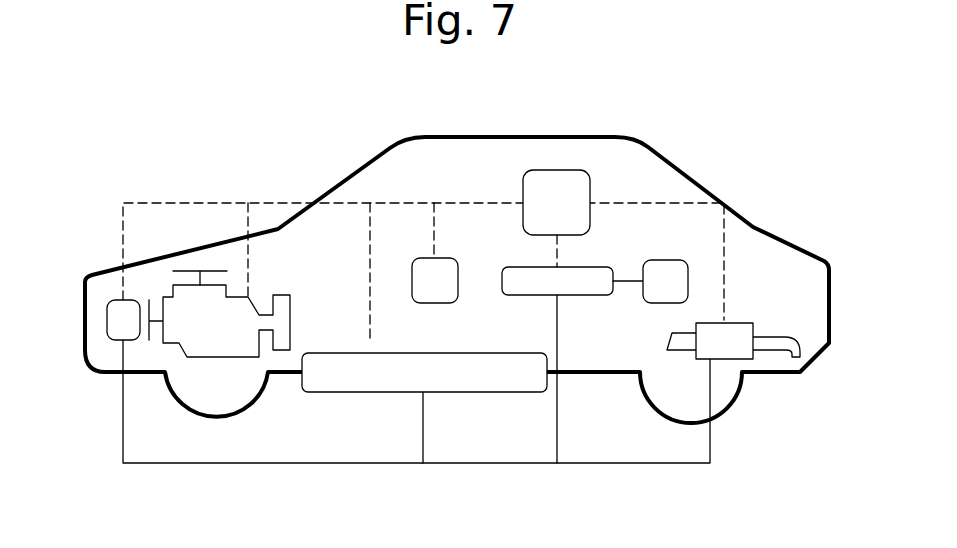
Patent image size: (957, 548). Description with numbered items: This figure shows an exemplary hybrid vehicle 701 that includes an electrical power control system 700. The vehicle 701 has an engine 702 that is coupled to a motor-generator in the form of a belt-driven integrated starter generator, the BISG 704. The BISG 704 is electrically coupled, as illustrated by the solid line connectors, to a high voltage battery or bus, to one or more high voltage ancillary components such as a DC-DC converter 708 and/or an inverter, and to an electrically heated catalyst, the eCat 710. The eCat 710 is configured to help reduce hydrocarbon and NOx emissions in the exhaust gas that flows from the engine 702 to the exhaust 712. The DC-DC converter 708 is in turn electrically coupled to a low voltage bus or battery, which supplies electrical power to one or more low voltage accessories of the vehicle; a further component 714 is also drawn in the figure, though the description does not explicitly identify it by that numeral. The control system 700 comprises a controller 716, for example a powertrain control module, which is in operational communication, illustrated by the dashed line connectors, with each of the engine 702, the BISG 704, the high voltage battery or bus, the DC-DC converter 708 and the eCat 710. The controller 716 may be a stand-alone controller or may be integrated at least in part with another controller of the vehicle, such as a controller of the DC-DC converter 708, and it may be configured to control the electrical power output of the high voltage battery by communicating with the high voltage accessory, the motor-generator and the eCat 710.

The electrical power control system 700 is at (245, 120).
The hybrid vehicle 701 is at (802, 248).
The engine 702 is at (217, 307).
The belt-driven integrated starter generator (BISG) 704 is at (105, 315).
The DC-DC converter 708 is at (517, 267).
The electrically heated catalyst (eCat) 710 is at (766, 379).
The exhaust 712 is at (730, 352).
The communication unit 714 is at (667, 260).
The controller 716 is at (560, 170).